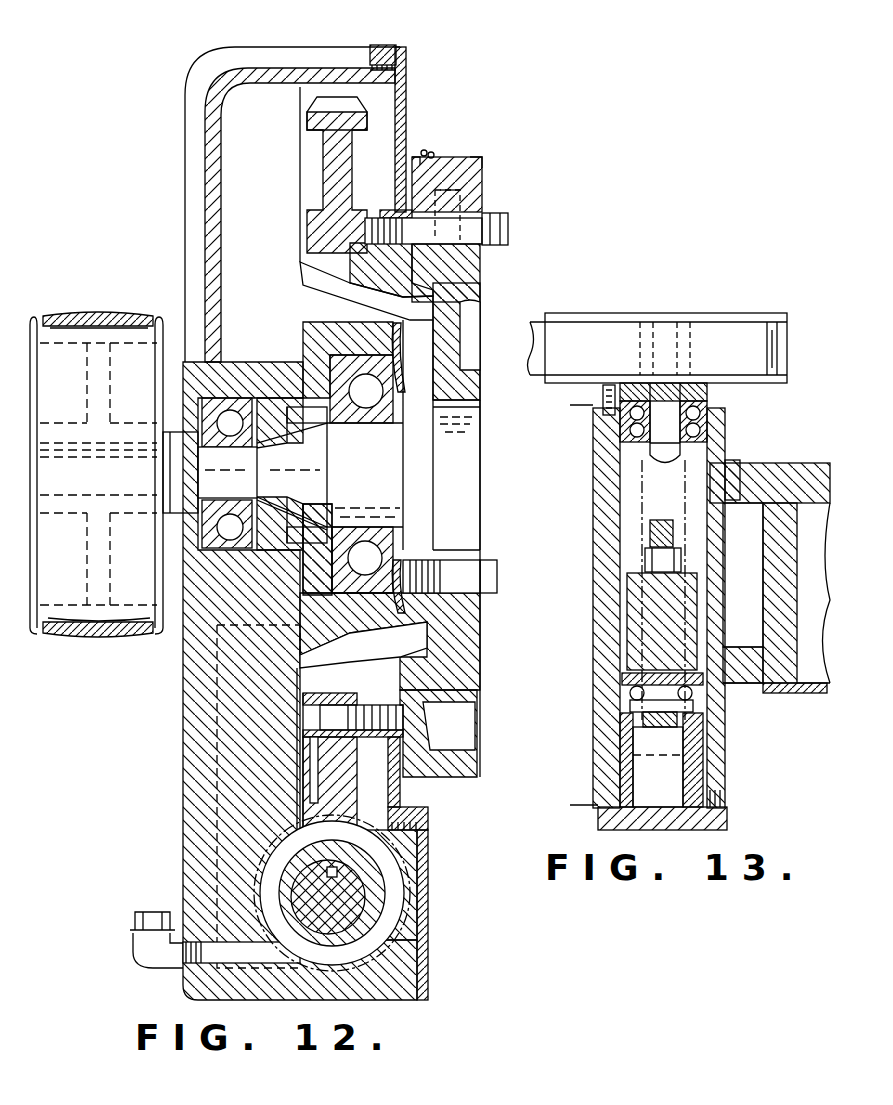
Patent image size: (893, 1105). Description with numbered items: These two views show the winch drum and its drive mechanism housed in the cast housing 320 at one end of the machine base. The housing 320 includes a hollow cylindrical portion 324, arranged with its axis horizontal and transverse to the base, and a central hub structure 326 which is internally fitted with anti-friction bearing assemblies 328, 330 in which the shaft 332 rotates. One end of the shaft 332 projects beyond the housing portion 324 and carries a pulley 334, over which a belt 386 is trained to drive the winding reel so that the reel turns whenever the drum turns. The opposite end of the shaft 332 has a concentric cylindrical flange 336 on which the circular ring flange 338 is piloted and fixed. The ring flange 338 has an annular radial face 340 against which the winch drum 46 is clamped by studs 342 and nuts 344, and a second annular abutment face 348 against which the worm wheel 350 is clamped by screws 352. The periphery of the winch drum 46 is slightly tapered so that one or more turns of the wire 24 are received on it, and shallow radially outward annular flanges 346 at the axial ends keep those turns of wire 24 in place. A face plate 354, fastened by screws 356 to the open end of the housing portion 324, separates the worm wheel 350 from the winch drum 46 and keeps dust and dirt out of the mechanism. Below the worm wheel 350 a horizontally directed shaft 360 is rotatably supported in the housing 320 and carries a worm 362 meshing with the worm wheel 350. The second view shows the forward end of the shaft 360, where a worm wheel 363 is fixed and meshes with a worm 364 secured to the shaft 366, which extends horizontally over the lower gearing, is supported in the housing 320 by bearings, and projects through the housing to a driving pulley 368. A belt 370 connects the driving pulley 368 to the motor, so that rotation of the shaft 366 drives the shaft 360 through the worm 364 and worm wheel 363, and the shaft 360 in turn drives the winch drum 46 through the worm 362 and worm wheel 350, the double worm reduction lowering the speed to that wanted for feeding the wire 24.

In FIG. 12, the screws 356 is at (398, 62).
In FIG. 12, the face plate 354 is at (405, 97).
In FIG. 12, the annular flanges 346 is at (485, 163).
In FIG. 12, the wire 24 is at (432, 152).
In FIG. 12, the winch drum 46 is at (465, 195).
In FIG. 12, the studs 342 is at (455, 222).
In FIG. 12, the nuts 344 is at (508, 228).
In FIG. 12, the worm wheel 350 is at (320, 228).
In FIG. 12, the annular abutment face 348 is at (350, 258).
In FIG. 12, the annular radial face 340 is at (408, 250).
In FIG. 12, the ring flange 338 is at (470, 283).
In FIG. 12, the pulley 334 is at (60, 325).
In FIG. 12, the anti-friction bearing assembly 330 is at (345, 340).
In FIG. 12, the hub structure 326 is at (290, 345).
In FIG. 12, the anti-friction bearing assembly 328 is at (240, 398).
In FIG. 12, the shaft 332 is at (300, 475).
In FIG. 12, the cylindrical flange 336 is at (415, 447).
In FIG. 12, the belt 386 is at (108, 630).
In FIG. 12, the screws 352 is at (338, 705).
In FIG. 12, the hollow cylindrical portion 324 is at (183, 790).
In FIG. 12, the shaft 360 is at (350, 895).
In FIG. 13, the shaft 360 is at (700, 612).
In FIG. 12, the worm 362 is at (372, 912).
In FIG. 13, the belt 370 is at (598, 335).
In FIG. 13, the driving pulley 368 is at (700, 322).
In FIG. 13, the shaft 366 is at (650, 558).
In FIG. 13, the worm wheel 363 is at (655, 528).
In FIG. 13, the worm 364 is at (637, 620).
In FIG. 13, the cast housing 320 is at (738, 680).